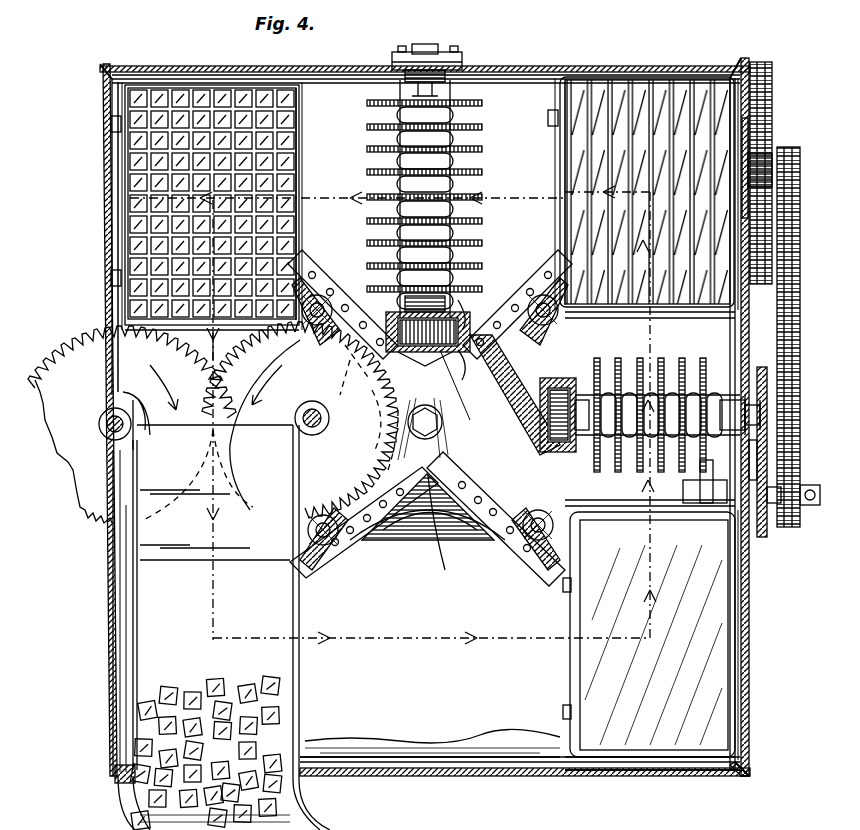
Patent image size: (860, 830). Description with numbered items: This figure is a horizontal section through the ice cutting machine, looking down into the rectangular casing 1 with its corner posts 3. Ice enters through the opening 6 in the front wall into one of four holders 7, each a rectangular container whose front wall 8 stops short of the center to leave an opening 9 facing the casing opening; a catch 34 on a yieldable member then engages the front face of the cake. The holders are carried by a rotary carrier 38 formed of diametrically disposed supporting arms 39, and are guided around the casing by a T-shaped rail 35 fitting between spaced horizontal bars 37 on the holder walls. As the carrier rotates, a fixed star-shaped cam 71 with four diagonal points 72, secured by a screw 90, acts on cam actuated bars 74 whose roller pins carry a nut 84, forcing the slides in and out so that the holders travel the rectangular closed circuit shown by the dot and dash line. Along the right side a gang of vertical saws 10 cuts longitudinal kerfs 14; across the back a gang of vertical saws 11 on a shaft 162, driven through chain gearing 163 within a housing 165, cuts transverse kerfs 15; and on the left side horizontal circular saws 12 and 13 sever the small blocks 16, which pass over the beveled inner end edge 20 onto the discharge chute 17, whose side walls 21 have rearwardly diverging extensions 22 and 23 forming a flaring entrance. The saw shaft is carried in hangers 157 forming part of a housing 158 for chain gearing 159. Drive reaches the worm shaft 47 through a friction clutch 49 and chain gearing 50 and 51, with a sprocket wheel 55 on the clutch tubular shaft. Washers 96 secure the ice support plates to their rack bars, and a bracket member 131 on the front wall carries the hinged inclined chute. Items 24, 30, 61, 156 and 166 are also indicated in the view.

The casing 1 is at (750, 740).
The corner posts 3 is at (752, 774).
The opening 6 is at (712, 770).
The holders 7 is at (296, 160).
The front wall 8 is at (685, 790).
The opening 9 is at (222, 368).
The vertical overhead circular saws 10 is at (660, 365).
The vertical overhead circular saws 11 is at (470, 172).
The horizontal circular saw 12 is at (80, 350).
The horizontal circular saw 13 is at (400, 390).
The longitudinal grooves or kerfs 14 is at (296, 138).
The transverse grooves or kerfs 15 is at (296, 96).
The small blocks or pieces 16 is at (165, 90).
The discharge chute 17 is at (300, 612).
The inner end edge 20 is at (237, 468).
The side walls 21 is at (137, 605).
The extension 22 is at (178, 475).
The extension 23 is at (314, 420).
The flow path 24 is at (128, 228).
The clip 30 is at (111, 124).
The catch 34 is at (602, 312).
The T-shaped rail 35 is at (372, 76).
The horizontal bars 37 is at (299, 180).
The rotary carrier 38 is at (428, 500).
The supporting arms 39 is at (300, 250).
The worm shaft 47 is at (690, 503).
The friction clutch 49 is at (705, 503).
The chain gearing 50 is at (800, 300).
The chain gearing 51 is at (770, 72).
The sprocket wheel 55 is at (800, 510).
The nut 61 is at (820, 505).
The star-shaped cam 71 is at (425, 520).
The points 72 is at (485, 520).
The cam actuated bars 74 is at (545, 285).
The nut 84 is at (320, 296).
The screw 90 is at (442, 428).
The washers 96 is at (246, 753).
The bracket member 131 is at (443, 745).
The shaft end 156 is at (745, 405).
The hangers 157 is at (580, 398).
The housing 158 is at (500, 445).
The chain gearing 159 is at (555, 452).
The shaft 162 is at (445, 74).
The chain gearing 163 is at (470, 376).
The housing 165 is at (106, 414).
The pivot pin 166 is at (313, 436).